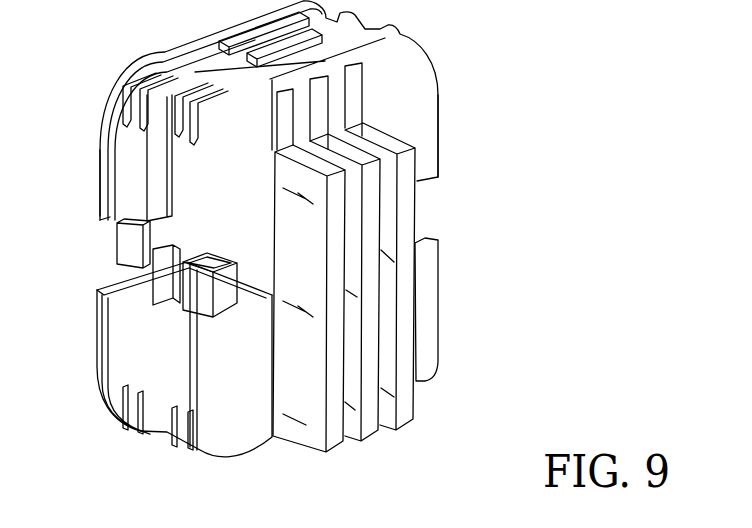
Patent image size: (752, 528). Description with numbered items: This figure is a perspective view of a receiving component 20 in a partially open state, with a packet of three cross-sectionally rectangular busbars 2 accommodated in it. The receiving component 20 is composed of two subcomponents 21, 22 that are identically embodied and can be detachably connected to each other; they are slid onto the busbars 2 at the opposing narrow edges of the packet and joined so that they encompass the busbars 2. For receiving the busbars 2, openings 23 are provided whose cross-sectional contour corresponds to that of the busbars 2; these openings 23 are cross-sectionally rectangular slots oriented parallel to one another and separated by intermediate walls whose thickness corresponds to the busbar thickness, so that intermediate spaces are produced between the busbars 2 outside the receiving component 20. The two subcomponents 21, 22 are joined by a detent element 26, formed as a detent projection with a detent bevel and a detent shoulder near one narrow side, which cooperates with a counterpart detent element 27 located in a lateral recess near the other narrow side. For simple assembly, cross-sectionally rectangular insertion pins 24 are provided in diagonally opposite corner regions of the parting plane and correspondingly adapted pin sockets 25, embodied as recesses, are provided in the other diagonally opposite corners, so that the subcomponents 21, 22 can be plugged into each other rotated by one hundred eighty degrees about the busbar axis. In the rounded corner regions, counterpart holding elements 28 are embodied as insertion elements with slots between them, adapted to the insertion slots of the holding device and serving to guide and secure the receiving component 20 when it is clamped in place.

The busbars 2 is at (313, 452).
The receiving component 20 is at (480, 197).
The subcomponent 21 is at (443, 125).
The subcomponent 22 is at (437, 341).
The openings 23 is at (350, 85).
The insertion pins 24 is at (117, 245).
The pin sockets 25 is at (158, 283).
The detent element 26 is at (150, 276).
The counterpart detent element 27 is at (147, 207).
The counterpart holding elements 28 is at (122, 84).